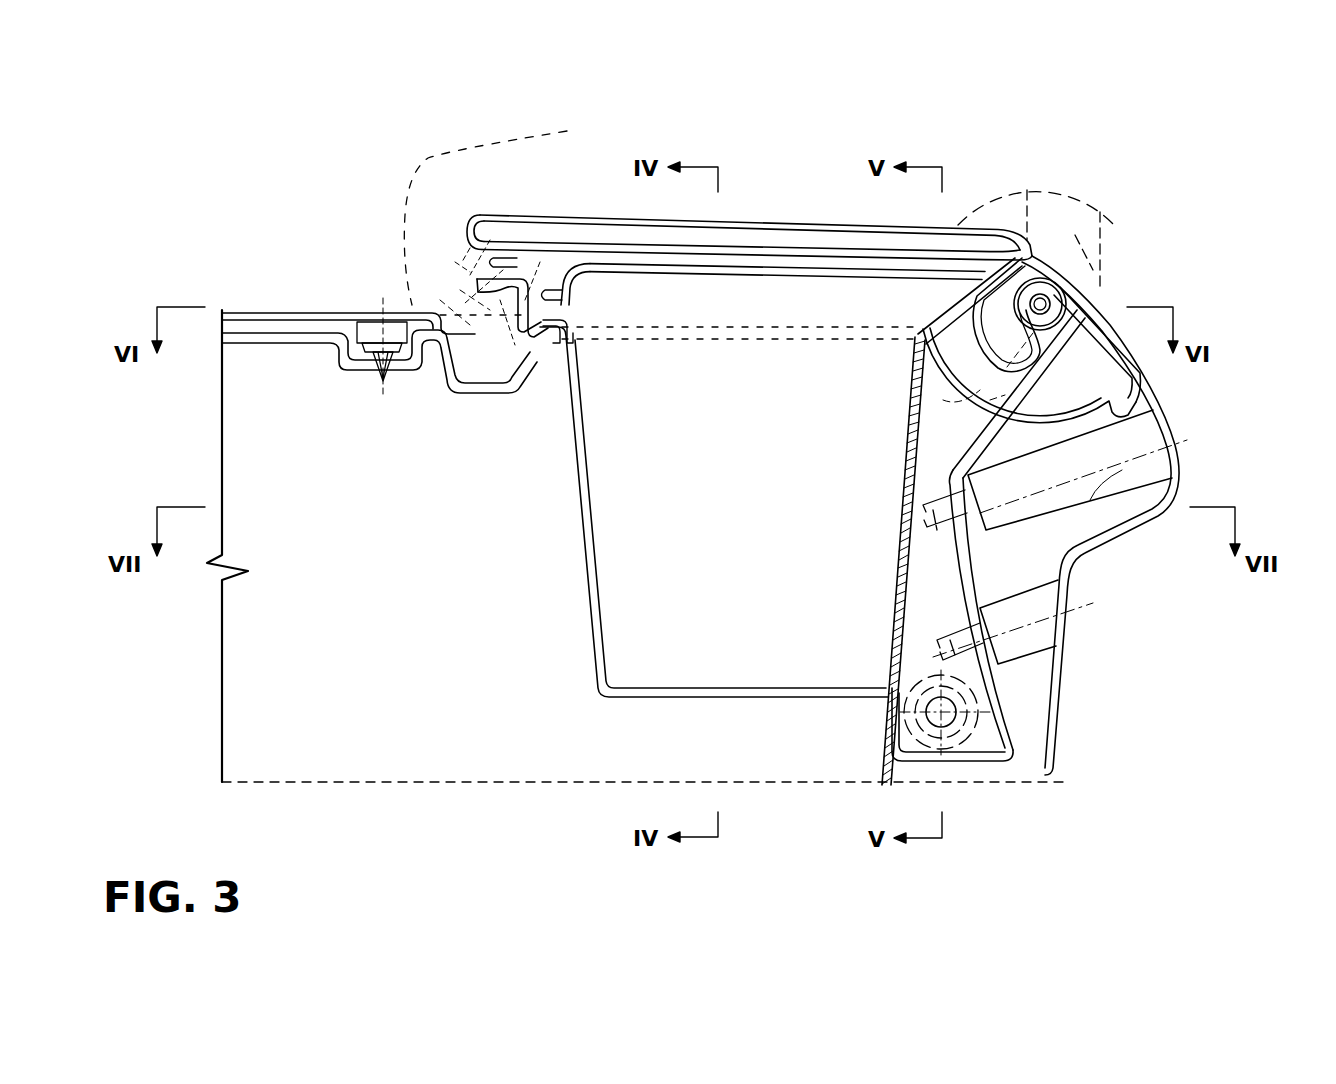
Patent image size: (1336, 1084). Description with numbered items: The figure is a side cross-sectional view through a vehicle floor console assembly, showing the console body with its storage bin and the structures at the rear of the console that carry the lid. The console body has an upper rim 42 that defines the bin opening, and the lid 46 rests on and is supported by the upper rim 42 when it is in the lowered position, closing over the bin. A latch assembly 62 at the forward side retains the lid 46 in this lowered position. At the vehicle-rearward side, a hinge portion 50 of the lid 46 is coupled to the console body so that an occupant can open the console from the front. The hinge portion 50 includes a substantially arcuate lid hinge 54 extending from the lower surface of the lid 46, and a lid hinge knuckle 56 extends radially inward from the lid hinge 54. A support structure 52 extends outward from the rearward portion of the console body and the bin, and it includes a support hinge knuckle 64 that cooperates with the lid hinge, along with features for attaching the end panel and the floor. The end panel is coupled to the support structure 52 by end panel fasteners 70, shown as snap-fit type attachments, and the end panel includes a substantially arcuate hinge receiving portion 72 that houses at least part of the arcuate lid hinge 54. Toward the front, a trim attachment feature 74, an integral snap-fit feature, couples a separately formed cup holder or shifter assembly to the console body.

The upper rim 42 is at (558, 295).
The lid 46 is at (799, 220).
The hinge portion 50 is at (1108, 308).
The support structure 52 is at (980, 557).
The lid hinge 54 is at (1042, 277).
The lid hinge knuckle 56 is at (1068, 306).
The latch assembly 62 is at (465, 274).
The support hinge knuckle 64 is at (990, 340).
The end panel fastener 70 is at (1095, 500).
The hinge receiving portion 72 is at (1178, 421).
The trim attachment feature 74 is at (369, 308).